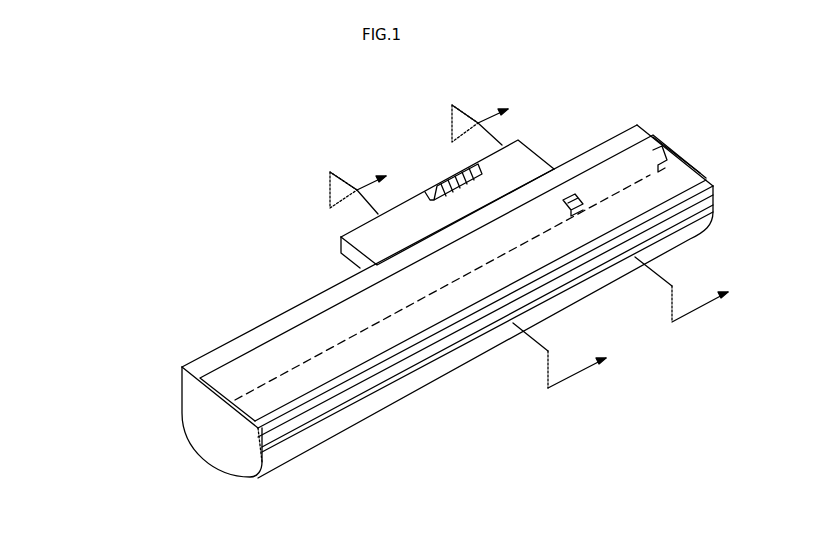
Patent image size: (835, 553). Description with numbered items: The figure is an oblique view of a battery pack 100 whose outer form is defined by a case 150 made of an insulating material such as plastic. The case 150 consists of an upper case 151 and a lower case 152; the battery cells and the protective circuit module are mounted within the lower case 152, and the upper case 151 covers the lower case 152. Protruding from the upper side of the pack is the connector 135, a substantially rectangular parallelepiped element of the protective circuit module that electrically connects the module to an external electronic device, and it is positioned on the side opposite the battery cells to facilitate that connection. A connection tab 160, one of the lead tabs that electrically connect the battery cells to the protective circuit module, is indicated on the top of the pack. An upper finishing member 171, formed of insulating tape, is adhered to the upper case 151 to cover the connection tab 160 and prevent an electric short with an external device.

The battery pack 100 is at (56, 112).
The connector 135 is at (447, 180).
The case 150 is at (90, 342).
The upper case 151 is at (183, 369).
The lower case 152 is at (185, 406).
The connection tab 160 is at (622, 175).
The upper finishing member 171 is at (273, 405).